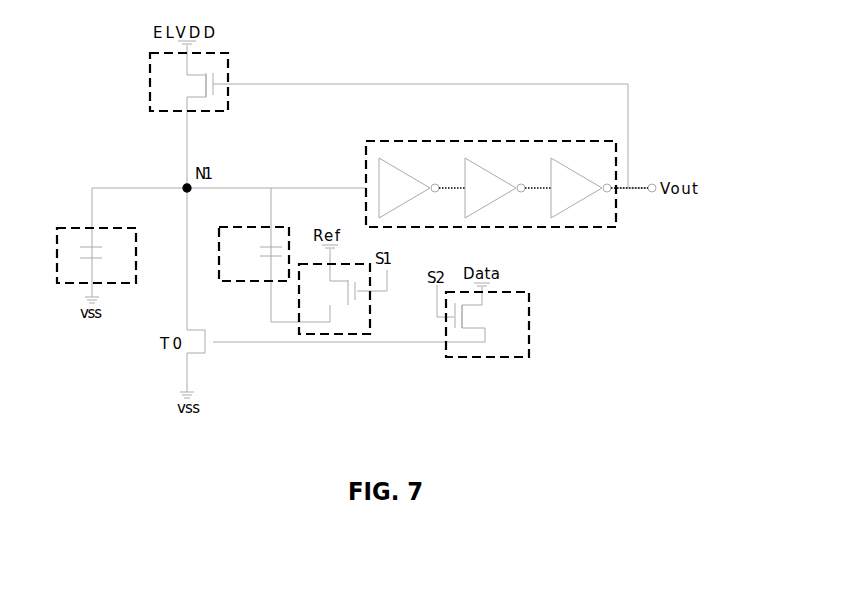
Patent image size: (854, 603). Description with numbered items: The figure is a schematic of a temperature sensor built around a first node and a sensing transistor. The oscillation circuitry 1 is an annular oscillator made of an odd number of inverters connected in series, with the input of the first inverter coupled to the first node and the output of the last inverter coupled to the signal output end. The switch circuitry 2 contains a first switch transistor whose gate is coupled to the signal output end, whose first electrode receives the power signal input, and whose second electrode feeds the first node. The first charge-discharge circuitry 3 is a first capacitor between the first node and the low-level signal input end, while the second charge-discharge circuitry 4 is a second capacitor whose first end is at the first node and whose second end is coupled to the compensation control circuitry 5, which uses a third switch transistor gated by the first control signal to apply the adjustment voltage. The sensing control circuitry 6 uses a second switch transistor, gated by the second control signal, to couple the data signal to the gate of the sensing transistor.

The oscillation circuitry 1 is at (497, 141).
The switch circuitry 2 is at (228, 53).
The first charge-discharge circuitry 3 is at (78, 228).
The second charge-discharge circuitry 4 is at (260, 281).
The compensation control circuitry 5 is at (345, 334).
The sensing control circuitry 6 is at (529, 340).